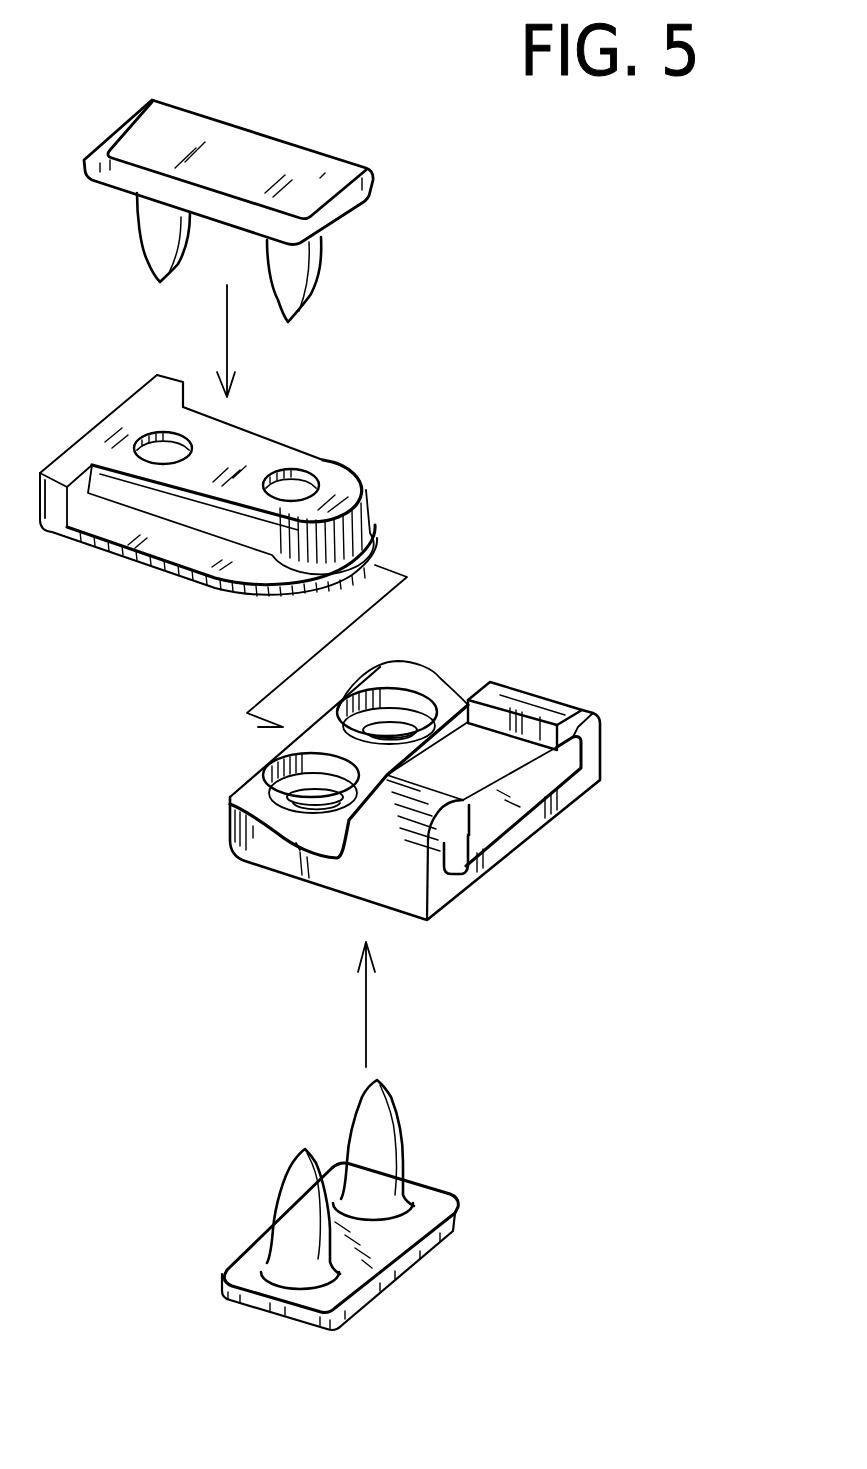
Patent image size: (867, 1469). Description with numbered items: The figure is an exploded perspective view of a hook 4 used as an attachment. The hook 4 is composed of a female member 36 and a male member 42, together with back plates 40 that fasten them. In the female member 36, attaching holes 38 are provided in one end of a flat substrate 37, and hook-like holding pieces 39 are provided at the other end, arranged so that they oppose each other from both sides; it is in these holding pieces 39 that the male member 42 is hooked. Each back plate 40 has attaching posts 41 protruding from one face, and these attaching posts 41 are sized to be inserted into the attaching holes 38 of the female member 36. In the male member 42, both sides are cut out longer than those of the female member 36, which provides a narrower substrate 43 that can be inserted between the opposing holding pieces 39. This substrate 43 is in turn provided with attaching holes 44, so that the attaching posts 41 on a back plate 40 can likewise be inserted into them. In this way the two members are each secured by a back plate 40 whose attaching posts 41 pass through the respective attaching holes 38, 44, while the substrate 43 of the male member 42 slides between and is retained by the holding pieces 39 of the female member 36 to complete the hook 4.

The hook 4 is at (437, 592).
The female member 36 is at (198, 787).
The flat substrate 37 is at (323, 842).
The attaching holes 38 is at (390, 715).
The hook-like holding pieces 39 is at (578, 724).
The back plate 40 is at (253, 150).
The attaching posts 41 is at (157, 233).
The male member 42 is at (281, 419).
The substrate 43 is at (203, 477).
The attaching holes 44 is at (306, 484).